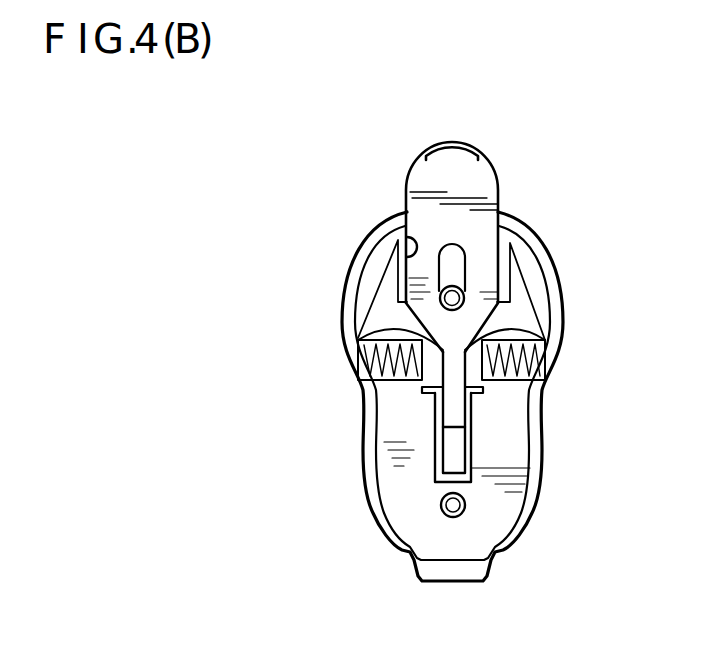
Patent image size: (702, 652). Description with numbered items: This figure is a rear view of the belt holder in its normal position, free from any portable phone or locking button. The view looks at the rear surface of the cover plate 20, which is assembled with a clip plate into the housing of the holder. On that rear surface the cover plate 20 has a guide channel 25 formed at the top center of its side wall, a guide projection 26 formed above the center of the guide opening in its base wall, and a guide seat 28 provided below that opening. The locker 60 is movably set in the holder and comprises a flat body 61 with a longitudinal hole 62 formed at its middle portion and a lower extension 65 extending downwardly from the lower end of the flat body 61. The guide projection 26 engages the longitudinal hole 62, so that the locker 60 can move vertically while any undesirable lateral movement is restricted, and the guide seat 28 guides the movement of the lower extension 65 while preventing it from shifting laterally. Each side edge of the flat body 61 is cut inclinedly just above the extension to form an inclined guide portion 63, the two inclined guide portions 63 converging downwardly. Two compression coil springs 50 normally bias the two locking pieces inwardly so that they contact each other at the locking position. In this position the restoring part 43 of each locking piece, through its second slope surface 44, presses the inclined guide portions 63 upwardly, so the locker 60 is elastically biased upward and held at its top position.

The cover plate 20 is at (330, 323).
The guide channel 25 is at (417, 255).
The guide projection 26 is at (465, 298).
The guide seat 28 is at (473, 467).
The restoring part 43 is at (422, 382).
The second slope surface 44 is at (372, 339).
The compression coil spring 50 is at (540, 372).
The locker 60 is at (502, 179).
The flat body 61 is at (499, 213).
The longitudinal hole 62 is at (462, 270).
The inclined guide portion 63 is at (468, 340).
The lower extension 65 is at (454, 414).